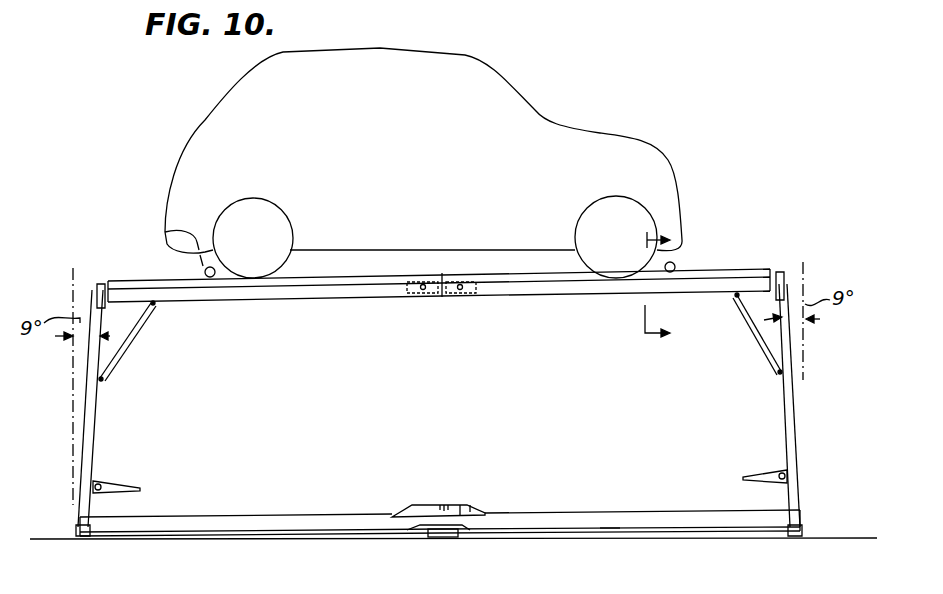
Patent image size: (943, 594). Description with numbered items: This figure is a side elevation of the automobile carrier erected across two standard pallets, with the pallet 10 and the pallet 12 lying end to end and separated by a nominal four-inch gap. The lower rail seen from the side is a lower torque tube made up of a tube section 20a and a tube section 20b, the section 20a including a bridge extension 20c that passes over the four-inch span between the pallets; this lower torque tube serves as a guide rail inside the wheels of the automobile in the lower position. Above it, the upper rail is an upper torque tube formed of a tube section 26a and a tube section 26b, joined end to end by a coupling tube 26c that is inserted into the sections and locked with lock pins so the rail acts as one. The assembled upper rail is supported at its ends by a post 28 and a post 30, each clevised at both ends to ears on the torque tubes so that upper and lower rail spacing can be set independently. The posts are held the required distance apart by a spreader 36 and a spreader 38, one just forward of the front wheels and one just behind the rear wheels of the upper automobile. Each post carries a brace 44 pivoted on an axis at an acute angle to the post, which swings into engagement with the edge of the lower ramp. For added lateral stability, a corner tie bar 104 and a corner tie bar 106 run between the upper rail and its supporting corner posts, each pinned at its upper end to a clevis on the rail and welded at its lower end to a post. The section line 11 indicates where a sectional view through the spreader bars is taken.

The pallet 10 is at (590, 533).
The section line 11 is at (679, 284).
The pallet 12 is at (258, 537).
The tube section 20a is at (172, 530).
The tube section 20b is at (718, 525).
The bridge extension 20c is at (445, 503).
The tube section 26a is at (307, 289).
The tube section 26b is at (571, 290).
The coupling tube 26c is at (448, 297).
The post 28 is at (793, 428).
The post 30 is at (94, 430).
The spreader 36 is at (165, 232).
The spreader 38 is at (680, 263).
The brace 44 is at (122, 482).
The corner tie bar 104 is at (123, 344).
The corner tie bar 106 is at (760, 337).